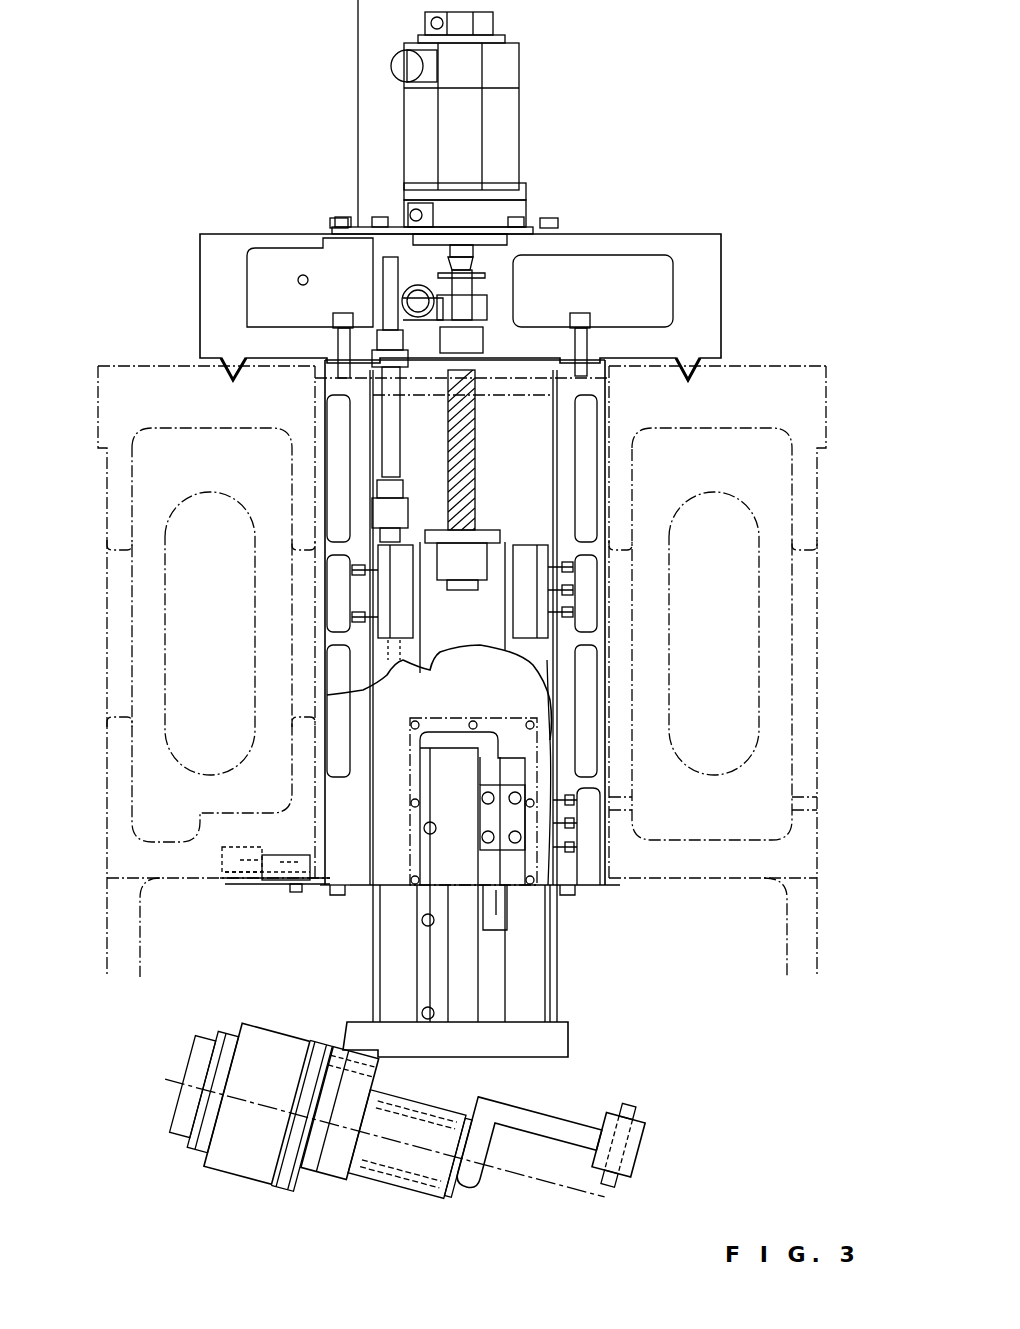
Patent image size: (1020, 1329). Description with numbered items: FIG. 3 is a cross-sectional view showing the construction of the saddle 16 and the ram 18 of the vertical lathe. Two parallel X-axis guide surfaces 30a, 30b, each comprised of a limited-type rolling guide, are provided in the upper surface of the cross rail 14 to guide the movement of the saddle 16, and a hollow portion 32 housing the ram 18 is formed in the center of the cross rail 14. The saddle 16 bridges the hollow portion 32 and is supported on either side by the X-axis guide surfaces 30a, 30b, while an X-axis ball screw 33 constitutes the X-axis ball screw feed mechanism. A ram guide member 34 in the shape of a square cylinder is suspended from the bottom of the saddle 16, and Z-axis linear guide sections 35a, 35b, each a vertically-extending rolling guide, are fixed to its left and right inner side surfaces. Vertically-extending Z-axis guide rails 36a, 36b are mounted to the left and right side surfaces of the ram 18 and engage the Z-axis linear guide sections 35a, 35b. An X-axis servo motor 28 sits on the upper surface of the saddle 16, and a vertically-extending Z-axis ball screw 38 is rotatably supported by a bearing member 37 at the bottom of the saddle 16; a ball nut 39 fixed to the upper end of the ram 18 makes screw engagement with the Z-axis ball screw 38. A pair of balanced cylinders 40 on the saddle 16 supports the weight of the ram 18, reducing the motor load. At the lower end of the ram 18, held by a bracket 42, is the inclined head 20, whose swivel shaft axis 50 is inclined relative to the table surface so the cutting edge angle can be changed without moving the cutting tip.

The cross rail 14 is at (98, 460).
The saddle 16 is at (708, 250).
The ram 18 is at (540, 950).
The inclined head 20 is at (464, 1130).
The X-axis servo motor 28 is at (515, 125).
The X-axis guide surface 30a is at (233, 360).
The X-axis guide surface 30b is at (690, 360).
The hollow portion 32 is at (535, 622).
The X-axis ball screw 33 is at (410, 296).
The ram guide member 34 is at (590, 490).
The Z-axis linear guide section 35a is at (400, 570).
The Z-axis linear guide section 35b is at (530, 610).
The Z-axis guide rail 36a is at (375, 650).
The Z-axis guide rail 36b is at (545, 650).
The bearing member 37 is at (500, 345).
The Z-axis ball screw 38 is at (475, 475).
The ball nut 39 is at (495, 540).
The balanced cylinder 40 is at (356, 88).
The bracket 42 is at (550, 1043).
The axis 50 is at (540, 1180).